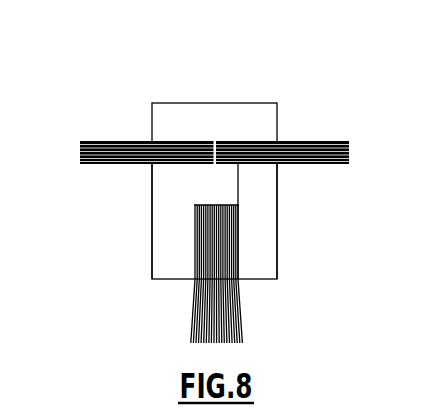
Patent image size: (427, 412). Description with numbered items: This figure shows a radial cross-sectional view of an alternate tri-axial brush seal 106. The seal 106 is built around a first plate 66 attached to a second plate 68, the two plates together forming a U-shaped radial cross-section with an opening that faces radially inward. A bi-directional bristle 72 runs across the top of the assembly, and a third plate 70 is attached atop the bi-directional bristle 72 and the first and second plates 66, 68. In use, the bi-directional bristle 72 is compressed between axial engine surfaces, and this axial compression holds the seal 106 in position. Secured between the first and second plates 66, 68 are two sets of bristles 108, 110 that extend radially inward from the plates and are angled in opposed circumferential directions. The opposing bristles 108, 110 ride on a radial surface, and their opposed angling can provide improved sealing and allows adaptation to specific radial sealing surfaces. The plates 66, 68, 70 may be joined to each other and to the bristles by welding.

The seal 106 is at (354, 44).
The third plate 70 is at (190, 118).
The bi-directional bristle 72 is at (103, 152).
The first plate 66 is at (172, 225).
The second plate 68 is at (262, 223).
The bristles 108 is at (190, 300).
The bristles 110 is at (243, 300).